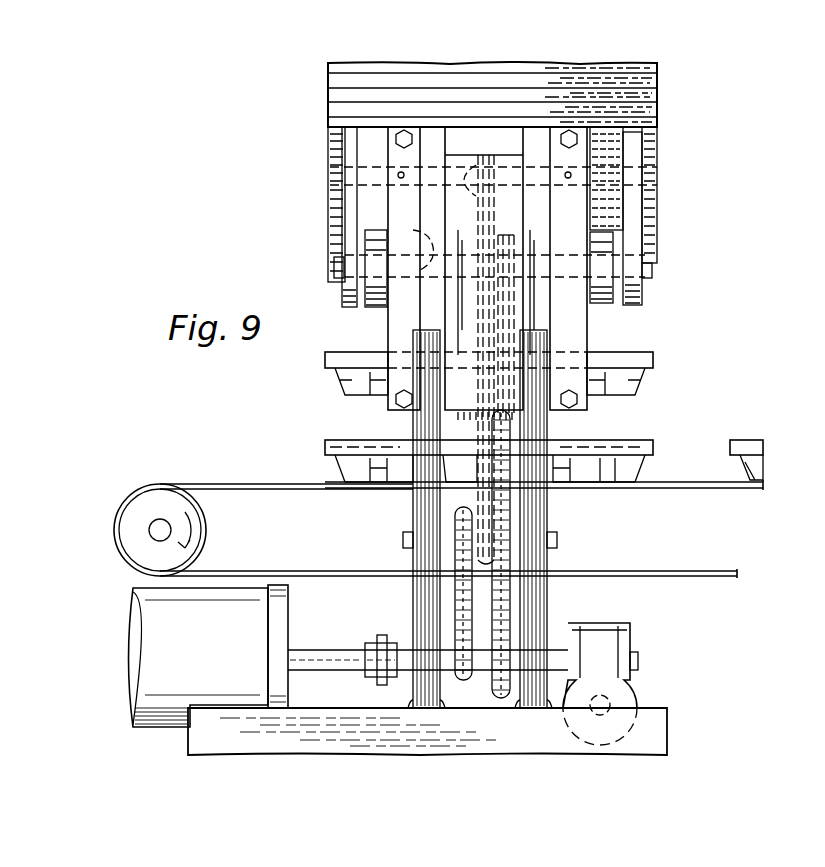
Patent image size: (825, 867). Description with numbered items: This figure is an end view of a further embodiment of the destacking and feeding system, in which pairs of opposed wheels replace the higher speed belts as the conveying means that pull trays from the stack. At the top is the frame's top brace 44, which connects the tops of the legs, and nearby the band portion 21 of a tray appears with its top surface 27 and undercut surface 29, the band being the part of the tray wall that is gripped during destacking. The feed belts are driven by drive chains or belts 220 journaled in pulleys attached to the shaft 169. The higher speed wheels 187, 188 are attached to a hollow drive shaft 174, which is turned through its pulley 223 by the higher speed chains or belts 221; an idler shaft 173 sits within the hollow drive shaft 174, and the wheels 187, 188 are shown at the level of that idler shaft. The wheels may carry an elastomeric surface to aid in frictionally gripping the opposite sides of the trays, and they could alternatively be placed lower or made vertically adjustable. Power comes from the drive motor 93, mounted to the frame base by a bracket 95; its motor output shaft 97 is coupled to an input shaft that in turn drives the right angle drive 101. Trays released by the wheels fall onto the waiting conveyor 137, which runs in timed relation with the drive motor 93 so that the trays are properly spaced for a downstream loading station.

The band portion 21 is at (658, 93).
The top brace 44 is at (510, 130).
The drive chains or belts 220 is at (474, 347).
The pulley 223 is at (512, 237).
The shaft 169 is at (652, 172).
The hollow drive shaft 174 is at (413, 230).
The idler shaft 173 is at (343, 278).
The wheel 187 is at (378, 303).
The wheel 188 is at (605, 303).
The higher speed chains or belts 221 is at (505, 445).
The top surface 27 is at (637, 443).
The undercut surface 29 is at (632, 456).
The conveyor 137 is at (707, 555).
The drive motor 93 is at (158, 659).
The bracket 95 is at (280, 618).
The motor output shaft 97 is at (342, 642).
The right angle drive 101 is at (588, 657).